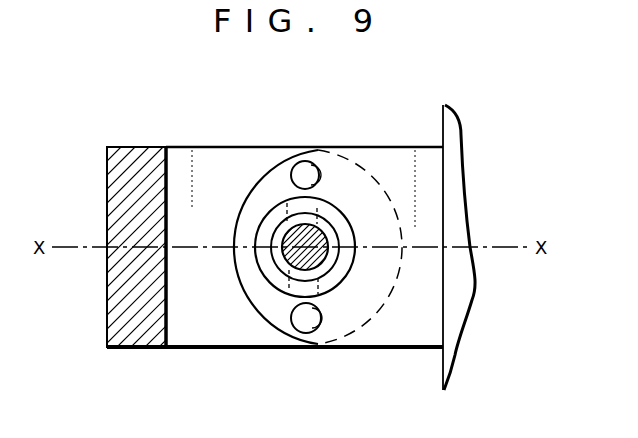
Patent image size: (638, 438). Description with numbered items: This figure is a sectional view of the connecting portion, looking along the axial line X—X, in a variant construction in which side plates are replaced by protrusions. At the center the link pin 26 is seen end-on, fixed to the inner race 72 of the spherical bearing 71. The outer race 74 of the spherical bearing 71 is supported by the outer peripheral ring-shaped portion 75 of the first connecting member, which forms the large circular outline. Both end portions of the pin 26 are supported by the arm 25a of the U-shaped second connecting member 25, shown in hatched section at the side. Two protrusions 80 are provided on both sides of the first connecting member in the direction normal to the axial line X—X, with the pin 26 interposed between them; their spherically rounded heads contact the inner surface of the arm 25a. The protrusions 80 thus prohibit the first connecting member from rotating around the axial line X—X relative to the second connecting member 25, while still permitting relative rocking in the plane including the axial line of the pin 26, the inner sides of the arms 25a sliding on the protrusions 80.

The second connecting member 25 is at (116, 300).
The arm 25a is at (190, 328).
The link pin 26 is at (325, 262).
The spherical bearing 71 is at (252, 273).
The inner race 72 is at (268, 228).
The outer race 74 is at (272, 222).
The outer peripheral ring-shaped portion 75 is at (268, 165).
The protrusions 80 is at (311, 163).